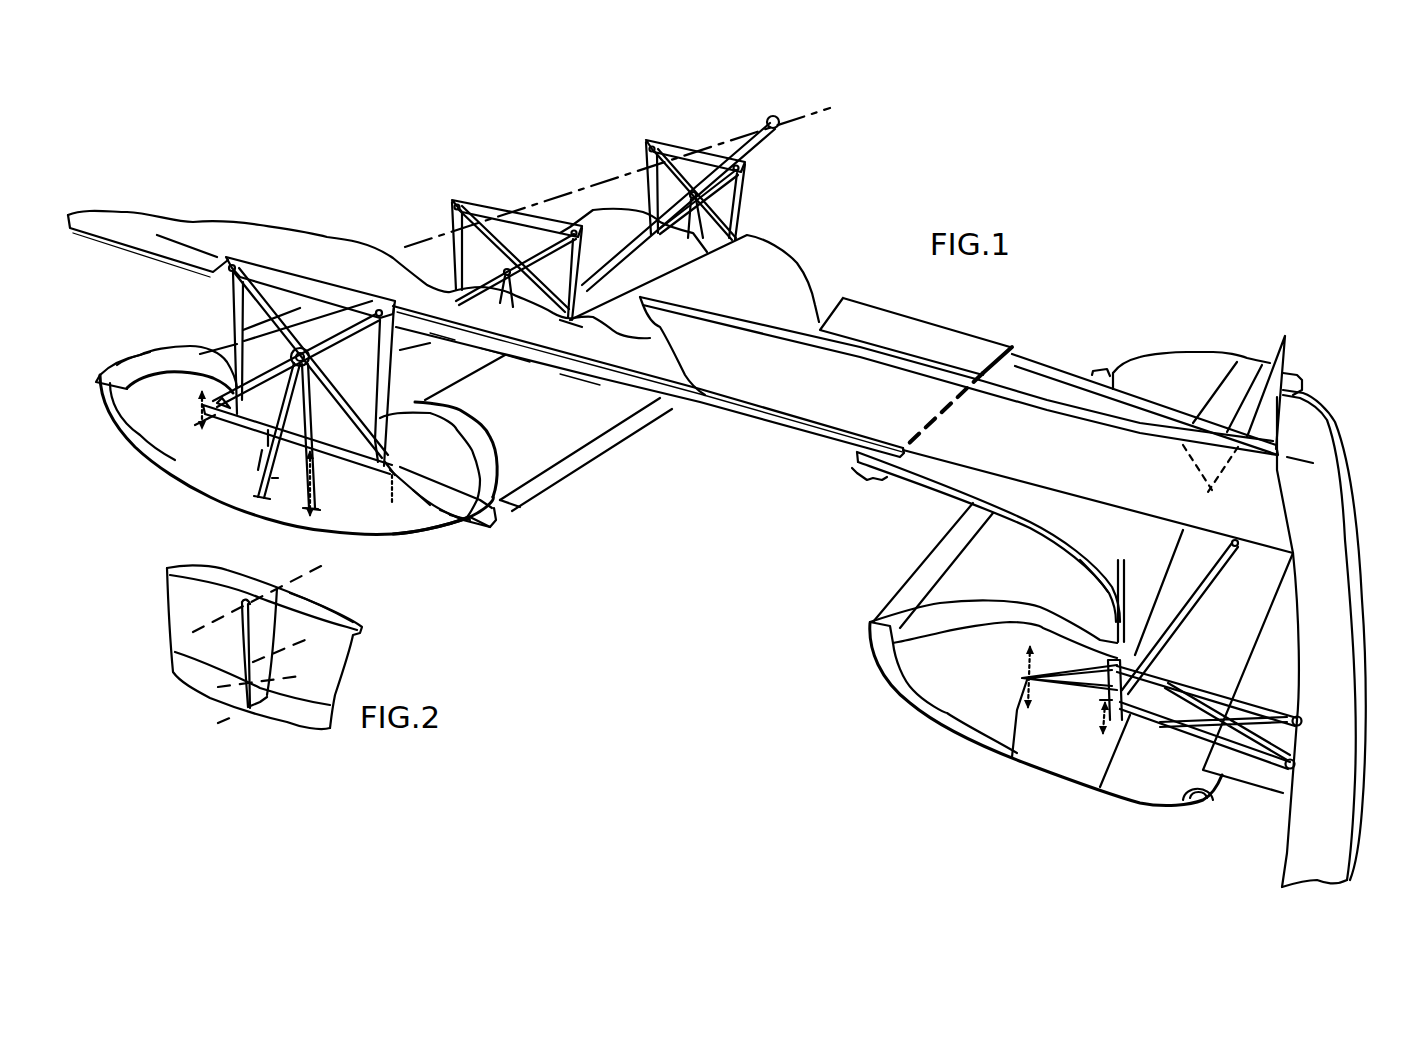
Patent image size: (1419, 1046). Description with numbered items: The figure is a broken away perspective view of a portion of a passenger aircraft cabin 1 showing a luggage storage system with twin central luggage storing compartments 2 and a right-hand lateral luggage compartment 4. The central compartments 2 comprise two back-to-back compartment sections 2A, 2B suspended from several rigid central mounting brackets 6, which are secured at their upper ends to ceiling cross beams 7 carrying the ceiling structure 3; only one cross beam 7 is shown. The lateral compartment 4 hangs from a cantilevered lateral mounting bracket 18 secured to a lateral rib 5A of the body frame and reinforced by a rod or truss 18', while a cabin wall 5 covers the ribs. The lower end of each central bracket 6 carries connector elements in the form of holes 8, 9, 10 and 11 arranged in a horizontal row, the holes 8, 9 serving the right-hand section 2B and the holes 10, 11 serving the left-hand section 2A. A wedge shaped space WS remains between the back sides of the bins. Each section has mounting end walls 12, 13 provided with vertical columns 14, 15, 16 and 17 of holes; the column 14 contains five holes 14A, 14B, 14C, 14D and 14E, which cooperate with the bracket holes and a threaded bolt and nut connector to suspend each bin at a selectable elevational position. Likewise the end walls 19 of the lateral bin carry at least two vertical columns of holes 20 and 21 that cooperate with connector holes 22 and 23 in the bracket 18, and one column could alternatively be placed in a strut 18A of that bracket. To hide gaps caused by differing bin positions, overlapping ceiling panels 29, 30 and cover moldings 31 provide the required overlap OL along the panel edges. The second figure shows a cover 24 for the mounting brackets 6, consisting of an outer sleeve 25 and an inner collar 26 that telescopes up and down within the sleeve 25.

In FIG. 1, the passenger aircraft cabin 1 is at (315, 192).
In FIG. 1, the twin central luggage storing compartments 2 is at (784, 194).
In FIG. 1, the left-hand compartment section 2A is at (160, 360).
In FIG. 1, the right-hand compartment section 2B is at (768, 268).
In FIG. 1, the ceiling structure 3 is at (382, 282).
In FIG. 1, the right-hand lateral luggage compartment 4 is at (1178, 368).
In FIG. 1, the cabin wall 5 is at (1295, 832).
In FIG. 1, the lateral rib 5A is at (1350, 587).
In FIG. 1, the central mounting bracket 6 is at (298, 283).
In FIG. 1, the cross beam 7 is at (855, 378).
In FIG. 1, the connector element hole 8 is at (495, 523).
In FIG. 1, the connector element hole 9 is at (312, 470).
In FIG. 1, the connector element hole 10 is at (267, 433).
In FIG. 1, the connector element hole 11 is at (235, 405).
In FIG. 1, the mounting end wall 12 is at (412, 522).
In FIG. 1, the mounting end wall 13 is at (138, 363).
In FIG. 1, the vertical column of holes 14 is at (421, 455).
In FIG. 1, the hole 14A is at (402, 445).
In FIG. 1, the hole 14B is at (420, 458).
In FIG. 1, the hole 14C is at (540, 503).
In FIG. 1, the hole 14D is at (467, 527).
In FIG. 1, the hole 14E is at (460, 530).
In FIG. 1, the vertical column of holes 15 is at (312, 507).
In FIG. 1, the vertical column of holes 16 is at (255, 459).
In FIG. 1, the vertical column of holes 17 is at (177, 411).
In FIG. 1, the lateral mounting bracket 18 is at (1209, 717).
In FIG. 1, the strut 18A is at (1130, 703).
In FIG. 1, the rod or truss 18' is at (1183, 617).
In FIG. 1, the end wall 19 is at (957, 697).
In FIG. 1, the vertical column of holes 20 is at (1017, 753).
In FIG. 1, the vertical column of holes 21 is at (1103, 727).
In FIG. 1, the connector hole 22 is at (1030, 673).
In FIG. 1, the connector hole 23 is at (1100, 707).
In FIG. 2, the cover 24 is at (372, 678).
In FIG. 2, the outer sleeve 25 is at (337, 647).
In FIG. 2, the inner collar 26 is at (303, 713).
In FIG. 1, the ceiling panel 29 is at (237, 235).
In FIG. 1, the ceiling panel 30 is at (1015, 372).
In FIG. 1, the cover molding 31 is at (1273, 368).
In FIG. 1, the overlap OL is at (1083, 567).
In FIG. 1, the wedge shaped space WS is at (277, 478).